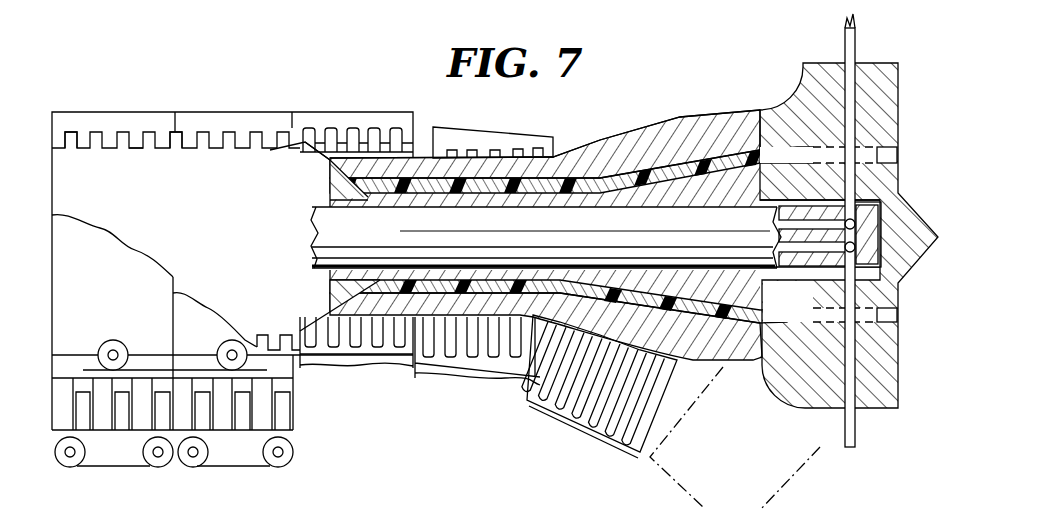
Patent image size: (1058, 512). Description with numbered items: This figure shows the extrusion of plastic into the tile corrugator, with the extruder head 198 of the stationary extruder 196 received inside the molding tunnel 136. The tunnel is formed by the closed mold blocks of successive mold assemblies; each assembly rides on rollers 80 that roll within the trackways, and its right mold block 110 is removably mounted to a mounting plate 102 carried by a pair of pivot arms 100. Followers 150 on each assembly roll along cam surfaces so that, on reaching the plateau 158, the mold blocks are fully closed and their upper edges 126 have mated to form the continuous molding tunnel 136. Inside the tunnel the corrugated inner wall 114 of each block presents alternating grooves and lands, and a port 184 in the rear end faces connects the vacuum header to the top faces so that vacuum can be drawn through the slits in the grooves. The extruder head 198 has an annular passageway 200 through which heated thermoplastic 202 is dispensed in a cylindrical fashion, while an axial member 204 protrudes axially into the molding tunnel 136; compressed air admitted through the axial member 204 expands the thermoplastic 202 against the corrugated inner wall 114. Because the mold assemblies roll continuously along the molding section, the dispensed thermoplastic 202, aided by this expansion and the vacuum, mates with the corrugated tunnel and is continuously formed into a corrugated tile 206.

The rollers 80 is at (287, 458).
The pivot arms 100 is at (287, 417).
The mounting plate 102 is at (282, 372).
The right mold block 110 is at (383, 112).
The corrugated inner wall 114 is at (138, 149).
The upper edge 126 is at (215, 122).
The molding tunnel 136 is at (232, 242).
The followers 150 is at (113, 340).
The plateau 158 is at (150, 368).
The port 184 is at (44, 123).
The extruder 196 is at (778, 75).
The extruder head 198 is at (617, 133).
The annular passageway 200 is at (430, 278).
The thermoplastic 202 is at (183, 148).
The axial member 204 is at (393, 236).
The corrugated tile 206 is at (83, 148).